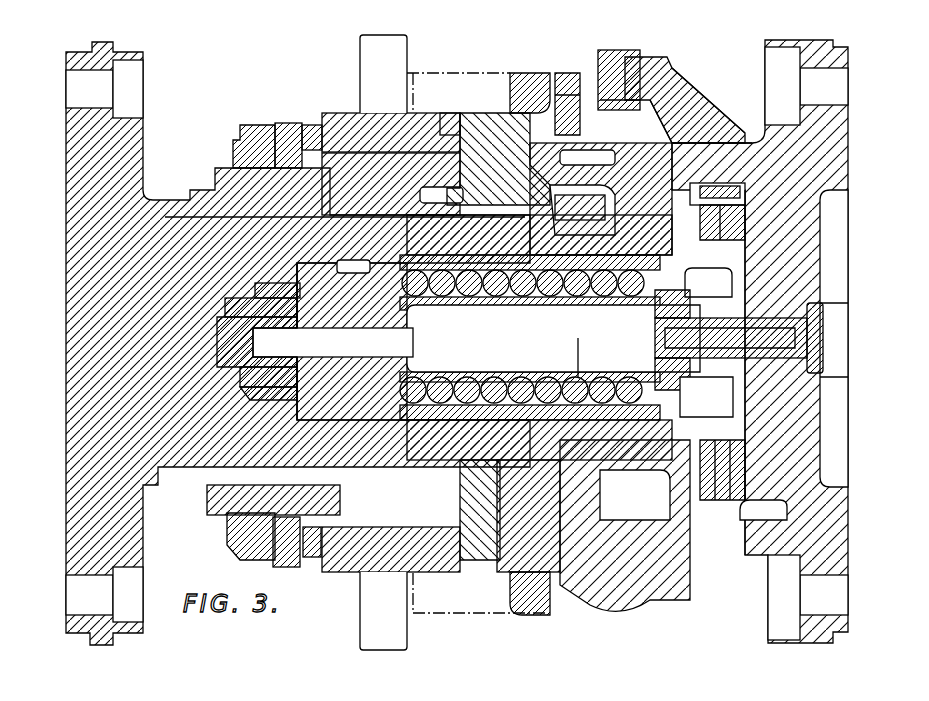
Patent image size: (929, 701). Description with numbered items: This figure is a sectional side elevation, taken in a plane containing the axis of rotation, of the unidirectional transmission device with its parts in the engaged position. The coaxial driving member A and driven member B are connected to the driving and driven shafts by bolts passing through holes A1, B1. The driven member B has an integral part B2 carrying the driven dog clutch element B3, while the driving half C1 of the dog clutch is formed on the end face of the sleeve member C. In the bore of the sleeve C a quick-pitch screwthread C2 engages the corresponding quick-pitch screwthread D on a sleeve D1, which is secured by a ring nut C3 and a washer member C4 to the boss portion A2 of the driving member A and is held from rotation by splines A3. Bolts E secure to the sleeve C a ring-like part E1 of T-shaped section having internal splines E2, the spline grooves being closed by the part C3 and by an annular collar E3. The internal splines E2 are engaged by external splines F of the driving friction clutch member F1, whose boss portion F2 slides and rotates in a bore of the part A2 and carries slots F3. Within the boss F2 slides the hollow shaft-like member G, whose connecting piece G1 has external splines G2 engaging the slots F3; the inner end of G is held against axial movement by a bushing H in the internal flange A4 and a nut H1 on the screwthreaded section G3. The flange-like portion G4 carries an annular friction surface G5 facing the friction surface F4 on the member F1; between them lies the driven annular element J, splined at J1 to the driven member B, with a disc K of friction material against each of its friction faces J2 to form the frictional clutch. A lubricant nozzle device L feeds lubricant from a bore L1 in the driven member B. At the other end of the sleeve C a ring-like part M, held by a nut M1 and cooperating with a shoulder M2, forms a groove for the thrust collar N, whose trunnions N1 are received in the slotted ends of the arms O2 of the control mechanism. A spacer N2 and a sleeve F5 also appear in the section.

The driving member A is at (102, 170).
The holes A1 is at (85, 90).
The boss portion A2 is at (345, 222).
The splines A3 is at (300, 220).
The internal flange A4 is at (307, 275).
The driven member B is at (823, 127).
The holes B1 is at (822, 82).
The part carrying dog clutch half B2 is at (673, 102).
The driven dog clutch element B3 is at (620, 90).
The sleeve member C is at (510, 160).
The driving half of dog clutch C1 is at (613, 77).
The quick-pitch screwthread C2 is at (452, 190).
The ring nut C3 is at (543, 160).
The washer member C4 is at (512, 270).
The quick-pitch screwthread D is at (217, 498).
The sleeve D1 is at (172, 470).
The bolts E is at (660, 65).
The ring-like part E1 is at (650, 590).
The internal splines E2 is at (673, 103).
The annular collar E3 is at (653, 157).
The external splines F is at (570, 157).
The driving friction clutch member F1 is at (677, 162).
The boss portion F2 is at (687, 460).
The longitudinal splines or slots F3 is at (417, 380).
The annular friction surface F4 is at (653, 383).
The shaft sleeve F5 is at (580, 347).
The hollow shaft-like member G is at (598, 380).
The annular connecting piece G1 is at (237, 312).
The external splines G2 is at (423, 267).
The screwthreaded section G3 is at (233, 345).
The flange-like portion G4 is at (737, 257).
The annular friction surface G5 is at (740, 470).
The bushing H is at (243, 378).
The nut H1 is at (262, 388).
The annular element J is at (703, 215).
The external splines J1 is at (703, 182).
The friction faces J2 is at (705, 250).
The annular disc of friction material K is at (712, 470).
The lubricant distributing nozzle device L is at (767, 338).
The bore L1 is at (833, 340).
The ring-like part M is at (293, 140).
The nut M1 is at (253, 145).
The shoulder M2 is at (472, 123).
The thrust collar N is at (348, 130).
The trunnions N1 is at (385, 73).
The gear spacer N2 is at (317, 140).
The downwardly projecting arms O2 is at (518, 603).